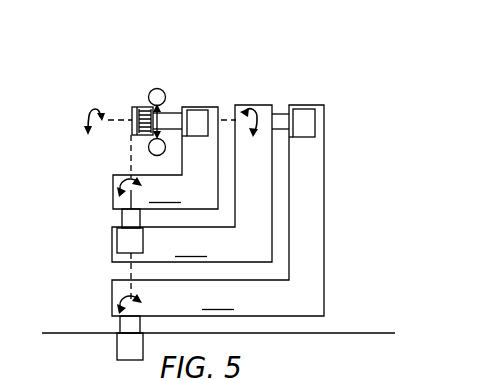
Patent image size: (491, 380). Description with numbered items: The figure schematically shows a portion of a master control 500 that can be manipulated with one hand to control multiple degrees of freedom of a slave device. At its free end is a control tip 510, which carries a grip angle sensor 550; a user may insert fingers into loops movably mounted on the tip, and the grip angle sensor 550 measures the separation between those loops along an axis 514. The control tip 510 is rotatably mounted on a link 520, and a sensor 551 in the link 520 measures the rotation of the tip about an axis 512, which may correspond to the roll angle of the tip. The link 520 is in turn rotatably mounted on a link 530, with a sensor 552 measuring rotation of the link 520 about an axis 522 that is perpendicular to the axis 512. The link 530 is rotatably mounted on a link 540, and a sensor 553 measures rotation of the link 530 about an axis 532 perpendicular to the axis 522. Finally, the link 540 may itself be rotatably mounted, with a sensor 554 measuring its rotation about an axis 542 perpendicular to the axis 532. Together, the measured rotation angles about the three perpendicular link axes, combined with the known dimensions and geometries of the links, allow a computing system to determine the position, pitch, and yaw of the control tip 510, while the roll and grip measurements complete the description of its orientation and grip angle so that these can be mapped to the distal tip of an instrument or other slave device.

The master control 500 is at (381, 119).
The control tip 510 is at (130, 112).
The axis 512 is at (84, 121).
The axis 514 is at (158, 108).
The grip angle sensor 550 is at (140, 136).
The sensor 551 is at (197, 118).
The link 520 is at (165, 158).
The axis 522 is at (112, 187).
The sensor 552 is at (122, 240).
The link 530 is at (192, 183).
The axis 532 is at (264, 120).
The sensor 553 is at (316, 119).
The link 540 is at (218, 210).
The axis 542 is at (112, 293).
The sensor 554 is at (122, 340).